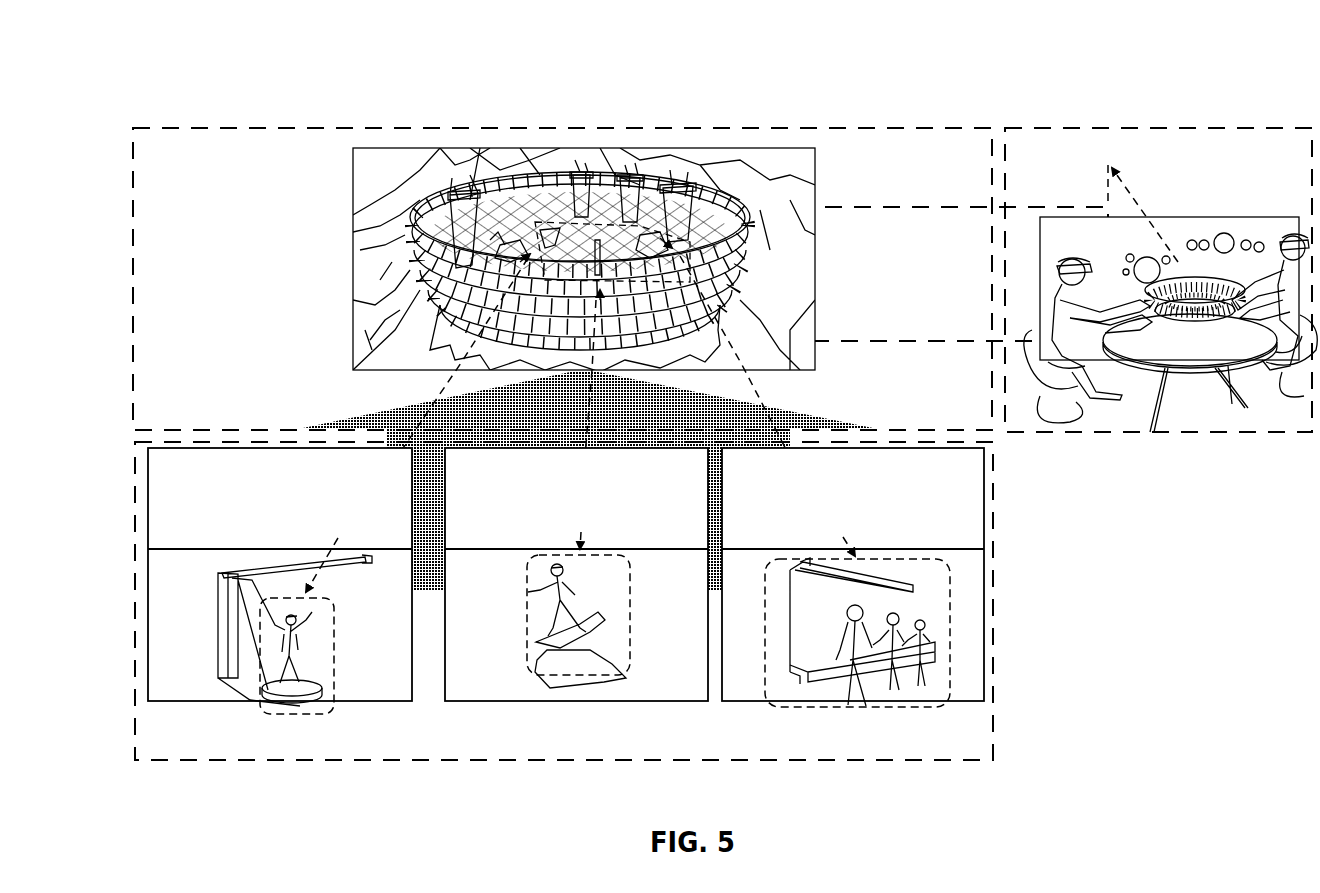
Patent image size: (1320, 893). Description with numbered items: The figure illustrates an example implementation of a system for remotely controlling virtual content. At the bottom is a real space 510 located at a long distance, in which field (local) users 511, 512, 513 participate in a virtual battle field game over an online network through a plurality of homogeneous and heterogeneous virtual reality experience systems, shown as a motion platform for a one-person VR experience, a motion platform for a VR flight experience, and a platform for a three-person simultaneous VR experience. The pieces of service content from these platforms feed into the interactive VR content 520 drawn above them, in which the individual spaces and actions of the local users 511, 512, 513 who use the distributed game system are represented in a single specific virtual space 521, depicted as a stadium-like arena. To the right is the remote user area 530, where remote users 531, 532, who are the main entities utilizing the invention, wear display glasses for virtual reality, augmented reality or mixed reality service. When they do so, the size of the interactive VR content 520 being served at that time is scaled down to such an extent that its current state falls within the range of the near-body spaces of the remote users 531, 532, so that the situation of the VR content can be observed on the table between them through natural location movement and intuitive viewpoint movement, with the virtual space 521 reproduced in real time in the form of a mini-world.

The real space 510 is at (465, 762).
The field (local) user 511 is at (300, 715).
The field (local) user 512 is at (580, 676).
The field (local) user 513 is at (838, 708).
The interactive VR content 520 is at (548, 128).
The virtual space 521 is at (748, 148).
The remote user area 530 is at (1155, 128).
The remote user 531 is at (1288, 236).
The remote user 532 is at (1066, 262).